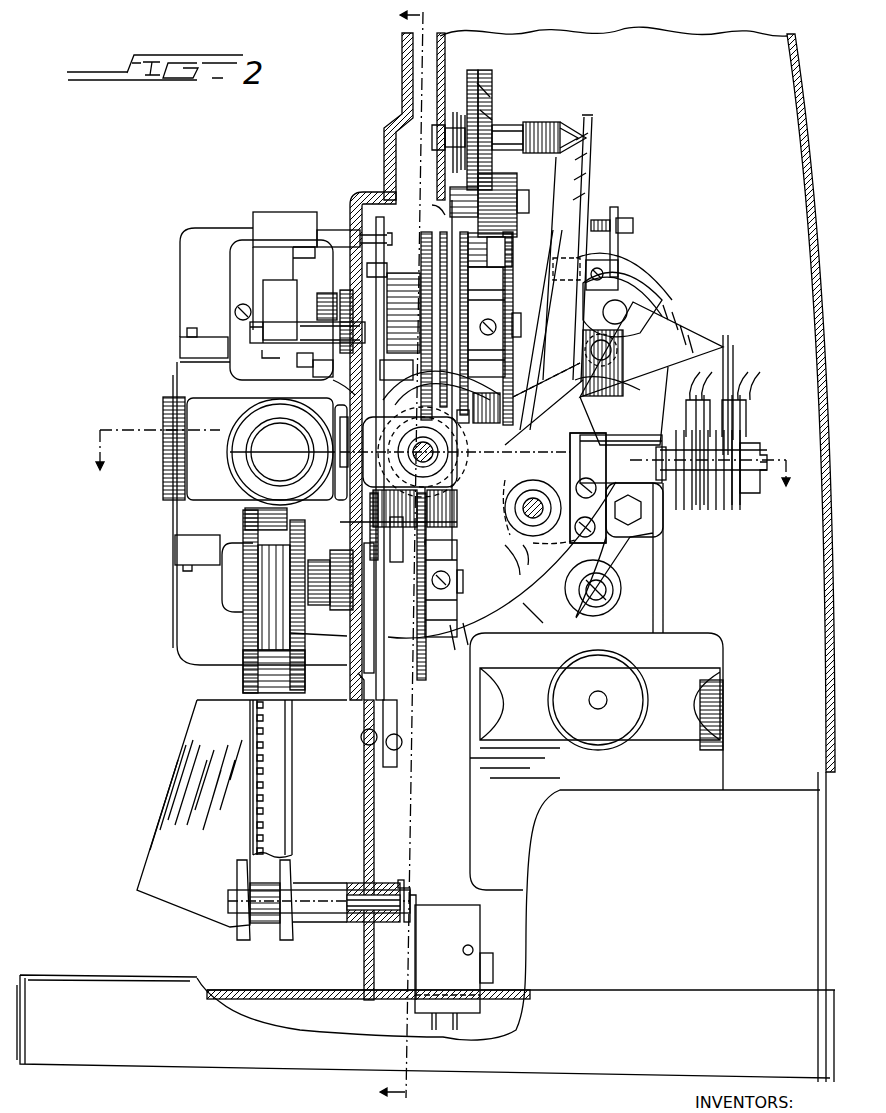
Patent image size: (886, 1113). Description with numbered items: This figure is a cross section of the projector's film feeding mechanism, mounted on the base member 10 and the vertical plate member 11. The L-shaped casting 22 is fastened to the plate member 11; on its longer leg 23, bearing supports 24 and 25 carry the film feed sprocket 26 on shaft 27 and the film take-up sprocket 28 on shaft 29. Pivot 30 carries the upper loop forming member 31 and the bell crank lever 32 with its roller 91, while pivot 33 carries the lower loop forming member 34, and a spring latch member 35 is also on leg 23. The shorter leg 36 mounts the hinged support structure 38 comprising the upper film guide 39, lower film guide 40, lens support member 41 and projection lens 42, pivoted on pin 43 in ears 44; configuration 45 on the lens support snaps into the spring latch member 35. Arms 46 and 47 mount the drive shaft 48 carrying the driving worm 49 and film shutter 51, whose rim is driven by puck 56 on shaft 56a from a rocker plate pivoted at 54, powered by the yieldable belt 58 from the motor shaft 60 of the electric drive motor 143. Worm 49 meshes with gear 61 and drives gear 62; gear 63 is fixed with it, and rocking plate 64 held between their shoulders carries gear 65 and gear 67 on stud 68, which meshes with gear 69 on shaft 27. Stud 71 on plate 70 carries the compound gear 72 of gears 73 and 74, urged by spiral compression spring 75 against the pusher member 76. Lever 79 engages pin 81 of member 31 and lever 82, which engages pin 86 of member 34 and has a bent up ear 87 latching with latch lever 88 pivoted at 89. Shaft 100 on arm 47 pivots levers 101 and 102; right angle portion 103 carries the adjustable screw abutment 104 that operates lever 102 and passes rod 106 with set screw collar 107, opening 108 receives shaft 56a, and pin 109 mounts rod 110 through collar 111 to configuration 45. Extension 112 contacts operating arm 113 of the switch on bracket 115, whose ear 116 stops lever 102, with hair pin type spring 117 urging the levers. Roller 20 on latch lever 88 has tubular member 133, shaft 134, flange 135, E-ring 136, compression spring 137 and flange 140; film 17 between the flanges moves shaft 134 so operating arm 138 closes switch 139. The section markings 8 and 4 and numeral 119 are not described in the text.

The base member 10 is at (510, 1072).
The section line 8 is at (389, 556).
The section line 4 is at (441, 472).
The vertical plate member 11 is at (362, 740).
The film 17 is at (283, 764).
The roller 20 is at (232, 928).
The L-shaped casting 22 is at (350, 692).
The longer leg 23 is at (383, 192).
The bearing support 24 is at (378, 230).
The bearing support 25 is at (335, 555).
The film feed sprocket 26 is at (280, 354).
The shaft 27 is at (522, 326).
The film take-up sprocket 28 is at (258, 562).
The shaft 29 is at (465, 582).
The pivot 30 is at (366, 334).
The upper loop forming member 31 is at (284, 226).
The bell crank lever 32 is at (318, 300).
The pivot 33 is at (305, 359).
The lower loop forming member 34 is at (300, 642).
The spring latch member 35 is at (333, 377).
The shorter leg 36 is at (197, 655).
The hinged support structure 38 is at (176, 380).
The upper film guide 39 is at (262, 358).
The lower film guide 40 is at (246, 527).
The lens support member 41 is at (197, 487).
The projection lens 42 is at (252, 500).
The pin 43 is at (188, 330).
The ears 44 is at (182, 349).
The configuration 45 is at (332, 498).
The extending arm 46 is at (437, 462).
The extending arm 47 is at (510, 545).
The drive shaft 48 is at (430, 472).
The driving worm 49 is at (457, 533).
The film shutter 51 is at (462, 640).
The pivot 54 is at (598, 580).
The driving puck 56 is at (648, 300).
The shaft 56a is at (660, 295).
The yieldable belt 58 is at (655, 593).
The motor shaft 60 is at (590, 712).
The gear 61 is at (420, 680).
The gear 62 is at (430, 233).
The gear 63 is at (468, 304).
The rocking plate 64 is at (434, 206).
The gear 65 is at (492, 95).
The gear 67 is at (505, 175).
The stud 68 is at (527, 205).
The gear 69 is at (516, 258).
The plate 70 is at (446, 100).
The stud 71 is at (432, 135).
The compound gear 72 is at (488, 72).
The gear 73 is at (493, 110).
The gear 74 is at (495, 126).
The spiral compression spring 75 is at (462, 100).
The pusher member 76 is at (540, 120).
The lever 79 is at (385, 320).
The pin 81 is at (335, 232).
The lever 82 is at (374, 650).
The pin 86 is at (342, 640).
The bent up ear 87 is at (397, 558).
The latch lever 88 is at (398, 713).
The pivot 89 is at (400, 745).
The roller 91 is at (284, 330).
The shaft 100 is at (517, 512).
The lever 101 is at (688, 312).
The lever 102 is at (594, 145).
The right angle portion 103 is at (618, 214).
The screw 104 is at (603, 220).
The rod 106 is at (635, 258).
The set screw collar 107 is at (620, 262).
The opening 108 is at (655, 278).
The pin 109 is at (612, 354).
The rod 110 is at (514, 392).
The adjustable eccentric set screw collar 111 is at (410, 400).
The extension 112 is at (723, 336).
The operating arm 113 is at (725, 362).
The bracket 115 is at (630, 440).
The bent up ear 116 is at (616, 488).
The hair pin type spring 117 is at (512, 476).
The ratchet wheel 119 is at (705, 512).
The tubular member 133 is at (350, 885).
The shaft 134 is at (350, 883).
The flange 135 is at (245, 868).
The E-ring 136 is at (403, 882).
The compression spring 137 is at (406, 888).
The operating arm 138 is at (414, 905).
The switch 139 is at (478, 945).
The flange 140 is at (290, 862).
The electric drive motor 143 is at (722, 705).